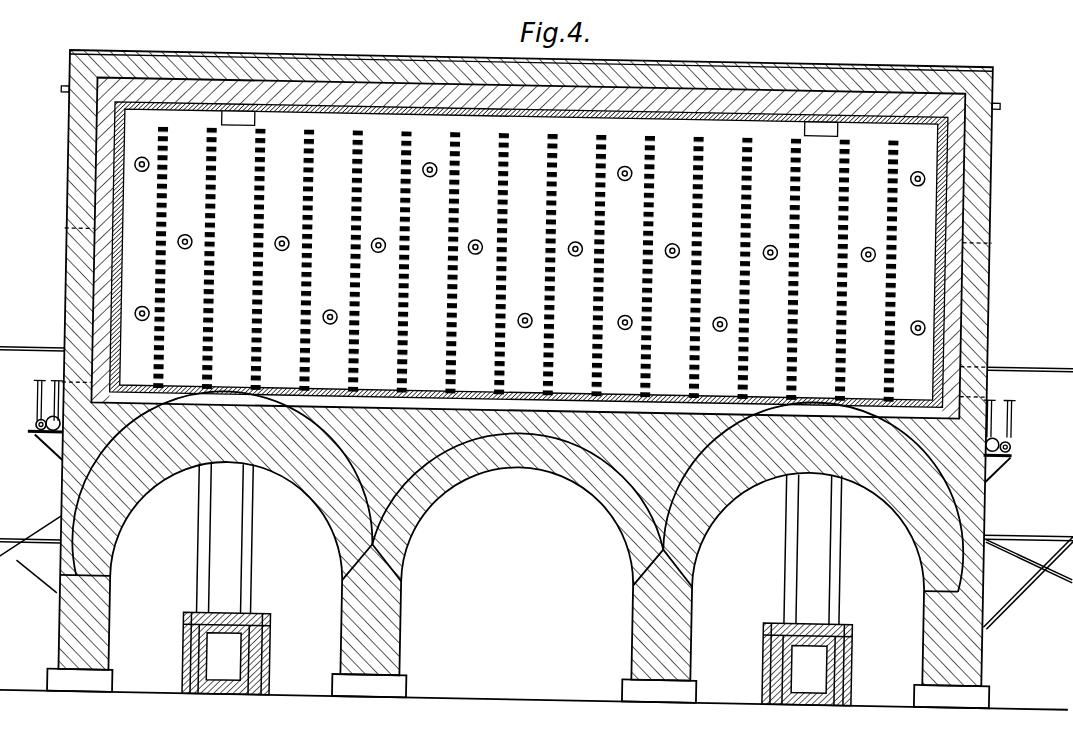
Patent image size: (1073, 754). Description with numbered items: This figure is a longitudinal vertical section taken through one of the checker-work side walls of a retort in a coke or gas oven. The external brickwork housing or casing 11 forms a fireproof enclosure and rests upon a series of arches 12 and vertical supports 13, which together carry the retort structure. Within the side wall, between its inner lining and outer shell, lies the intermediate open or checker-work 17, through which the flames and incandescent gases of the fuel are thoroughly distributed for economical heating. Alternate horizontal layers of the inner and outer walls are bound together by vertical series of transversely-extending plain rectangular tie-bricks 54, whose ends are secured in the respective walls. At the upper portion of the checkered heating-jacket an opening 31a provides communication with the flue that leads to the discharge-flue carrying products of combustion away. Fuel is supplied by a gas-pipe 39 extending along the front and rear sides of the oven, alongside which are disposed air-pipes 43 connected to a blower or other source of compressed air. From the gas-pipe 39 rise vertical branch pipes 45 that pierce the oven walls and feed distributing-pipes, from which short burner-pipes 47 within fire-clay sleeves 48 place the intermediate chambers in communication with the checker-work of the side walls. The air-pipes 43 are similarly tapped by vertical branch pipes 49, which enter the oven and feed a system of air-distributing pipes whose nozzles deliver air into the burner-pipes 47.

The external housing or casing 11 is at (620, 13).
The arches 12 is at (113, 424).
The vertical supports 13 is at (534, 657).
The checker-work 17 is at (529, 255).
The opening 31a is at (532, 143).
The burner-pipes 47 is at (577, 239).
The fire-clay sleeves 48 is at (675, 240).
The tie-bricks 54 is at (388, 163).
The vertical branch pipes 45 is at (520, 406).
The vertical branch pipes 49 is at (1024, 419).
The air-pipes 43 is at (520, 437).
The gas-pipe 39 is at (523, 459).